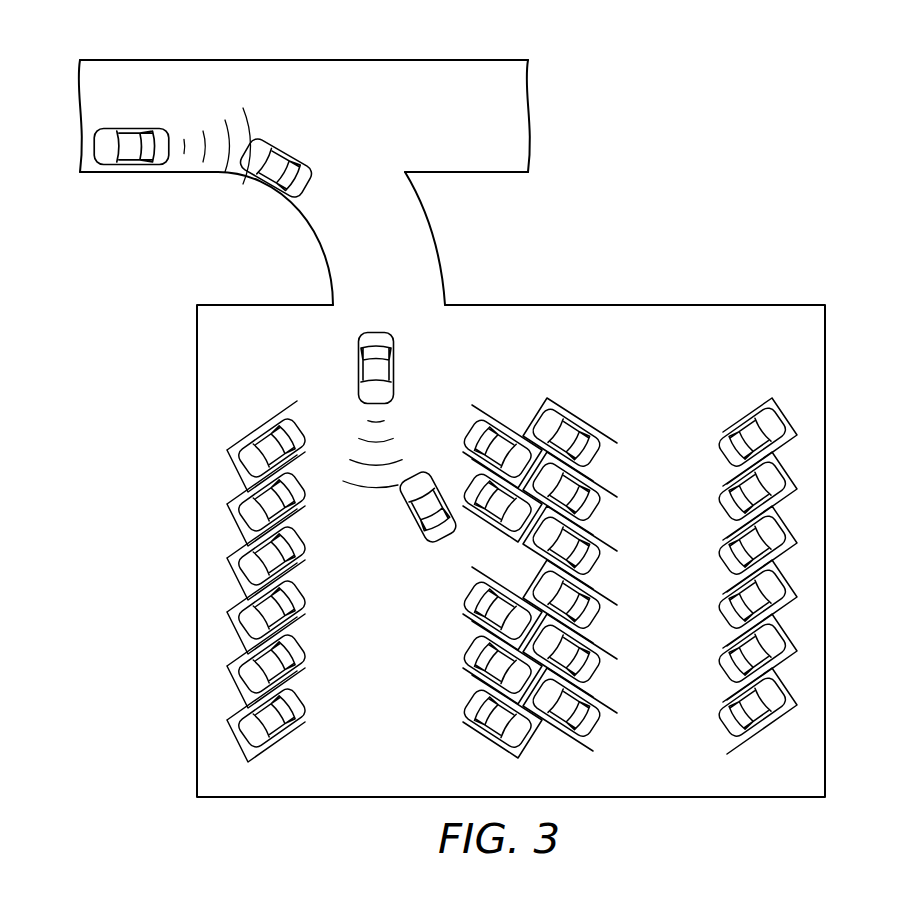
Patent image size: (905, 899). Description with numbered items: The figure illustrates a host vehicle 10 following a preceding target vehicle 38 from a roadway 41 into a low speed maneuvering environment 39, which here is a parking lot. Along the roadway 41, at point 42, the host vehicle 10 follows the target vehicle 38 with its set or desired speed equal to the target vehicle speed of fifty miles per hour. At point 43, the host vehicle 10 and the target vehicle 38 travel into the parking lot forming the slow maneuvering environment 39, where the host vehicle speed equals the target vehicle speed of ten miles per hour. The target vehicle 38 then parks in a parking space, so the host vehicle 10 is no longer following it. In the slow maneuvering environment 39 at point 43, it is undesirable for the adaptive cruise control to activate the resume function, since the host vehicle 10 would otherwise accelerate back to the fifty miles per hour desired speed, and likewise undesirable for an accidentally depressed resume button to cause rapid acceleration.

The host vehicle 10 is at (117, 150).
The target vehicle 38 is at (270, 157).
The low speed maneuvering environment 39 is at (217, 352).
The roadway 41 is at (372, 100).
The point 42 is at (117, 129).
The point 43 is at (377, 322).